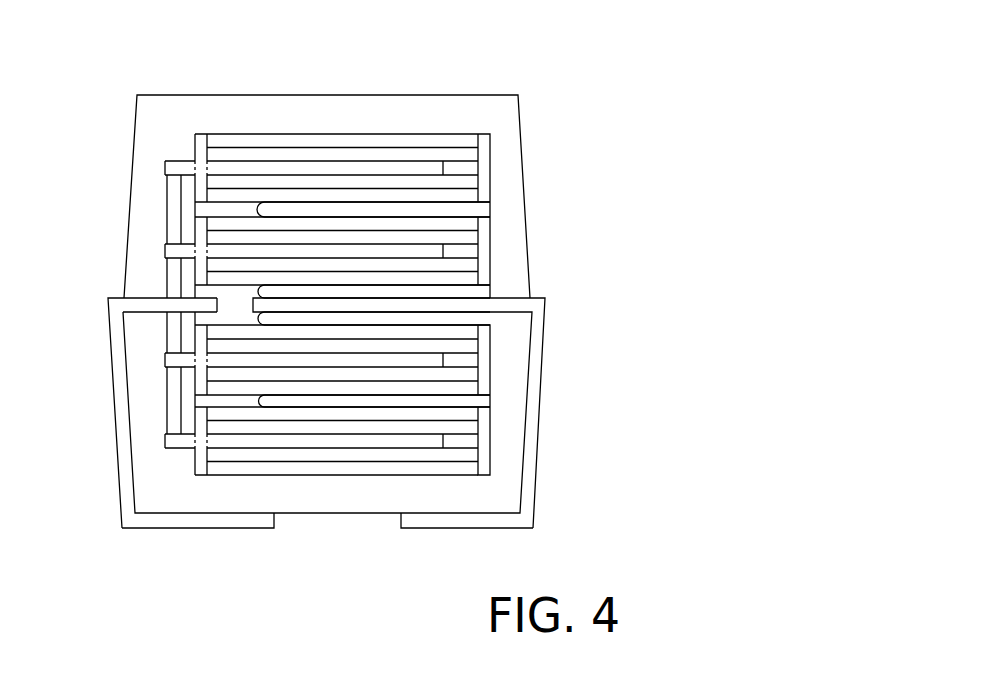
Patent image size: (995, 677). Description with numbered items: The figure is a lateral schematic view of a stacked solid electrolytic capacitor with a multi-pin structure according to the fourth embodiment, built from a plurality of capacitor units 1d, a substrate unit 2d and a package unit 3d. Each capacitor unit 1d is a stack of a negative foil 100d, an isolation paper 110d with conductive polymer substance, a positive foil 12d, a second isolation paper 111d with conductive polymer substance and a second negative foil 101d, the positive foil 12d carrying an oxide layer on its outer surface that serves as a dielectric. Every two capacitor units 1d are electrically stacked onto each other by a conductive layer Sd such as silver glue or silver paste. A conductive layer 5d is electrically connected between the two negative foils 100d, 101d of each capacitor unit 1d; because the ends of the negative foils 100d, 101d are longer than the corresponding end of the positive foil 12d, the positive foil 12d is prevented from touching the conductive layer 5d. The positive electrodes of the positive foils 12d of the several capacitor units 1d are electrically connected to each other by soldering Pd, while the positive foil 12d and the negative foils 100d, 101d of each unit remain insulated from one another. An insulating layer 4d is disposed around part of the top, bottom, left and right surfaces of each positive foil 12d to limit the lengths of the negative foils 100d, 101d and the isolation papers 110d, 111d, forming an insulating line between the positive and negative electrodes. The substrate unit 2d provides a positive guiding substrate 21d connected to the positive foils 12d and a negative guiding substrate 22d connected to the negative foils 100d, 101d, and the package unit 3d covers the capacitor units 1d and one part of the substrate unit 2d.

The package unit 3d is at (128, 93).
The insulating layer 4d is at (203, 123).
The soldering Pd is at (157, 204).
The negative foil 100d is at (428, 142).
The isolation paper 110d is at (465, 154).
The positive foil 12d is at (433, 168).
The isolation paper 111d is at (458, 180).
The negative foil 101d is at (460, 198).
The capacitor unit 1d is at (648, 27).
The conductive layer 5d is at (503, 199).
The conductive layer Sd is at (472, 208).
The substrate unit 2d is at (415, 567).
The positive guiding substrate 21d is at (252, 524).
The negative guiding substrate 22d is at (427, 523).